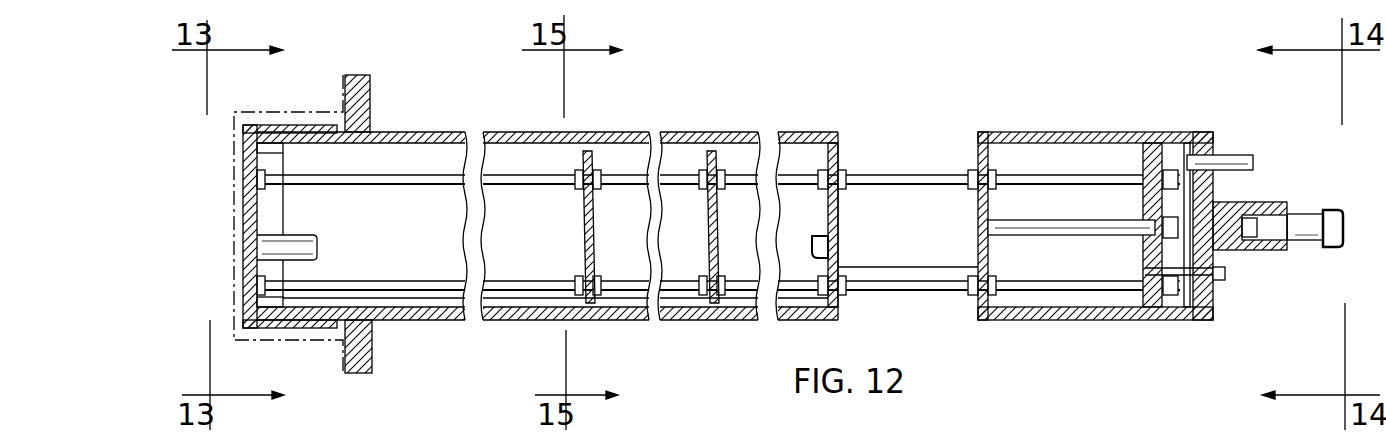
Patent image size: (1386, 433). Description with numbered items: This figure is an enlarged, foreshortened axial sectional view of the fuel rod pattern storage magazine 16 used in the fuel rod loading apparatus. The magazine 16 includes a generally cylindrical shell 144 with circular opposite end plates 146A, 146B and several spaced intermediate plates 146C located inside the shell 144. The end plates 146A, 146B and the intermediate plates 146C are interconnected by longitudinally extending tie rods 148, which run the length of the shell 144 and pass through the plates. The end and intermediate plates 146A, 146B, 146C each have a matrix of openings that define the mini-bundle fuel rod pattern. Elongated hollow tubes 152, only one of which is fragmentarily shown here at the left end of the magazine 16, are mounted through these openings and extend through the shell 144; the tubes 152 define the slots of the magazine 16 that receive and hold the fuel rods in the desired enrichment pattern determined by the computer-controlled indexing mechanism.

The fuel rod pattern storage magazine 16 is at (814, 96).
The cylindrical shell 144 is at (457, 133).
The end plate 146A is at (243, 210).
The end plate 146B is at (1213, 190).
The intermediate plates 146C is at (590, 213).
The tie rods 148 is at (428, 280).
The elongated hollow tubes 152 is at (300, 240).